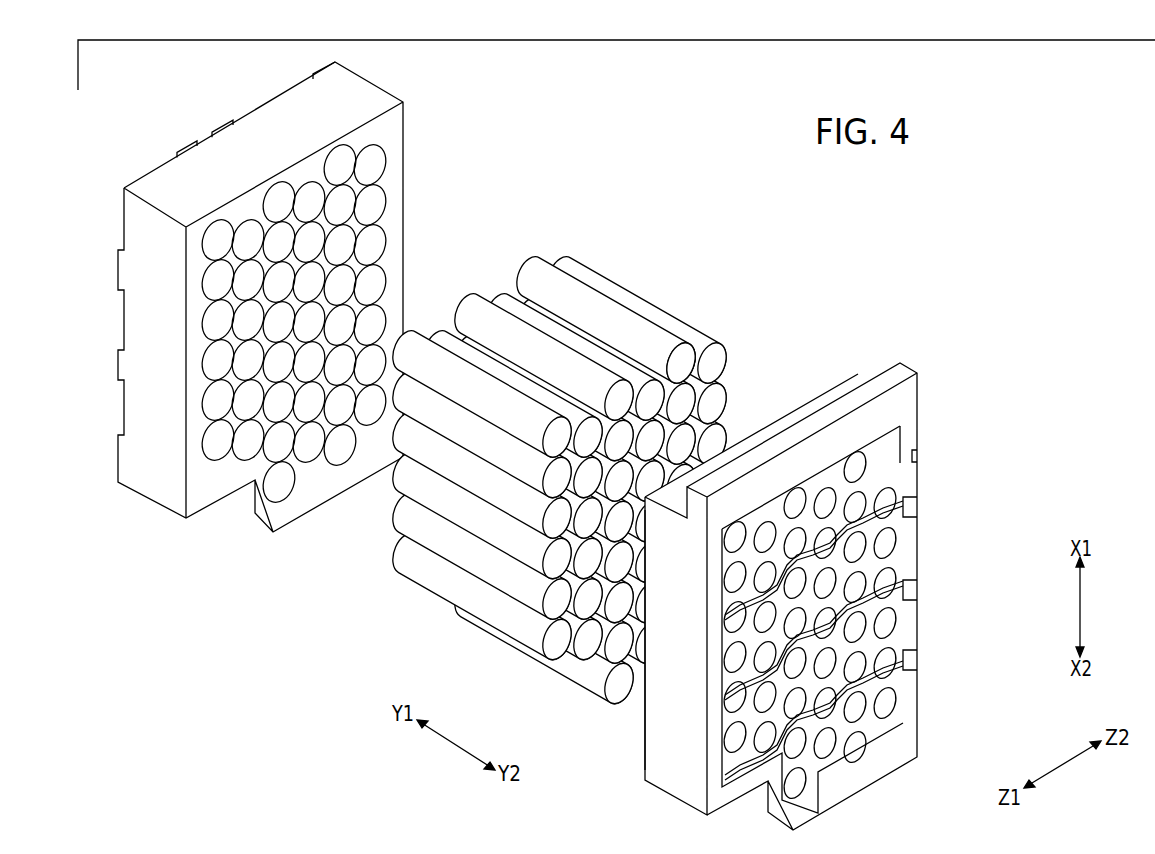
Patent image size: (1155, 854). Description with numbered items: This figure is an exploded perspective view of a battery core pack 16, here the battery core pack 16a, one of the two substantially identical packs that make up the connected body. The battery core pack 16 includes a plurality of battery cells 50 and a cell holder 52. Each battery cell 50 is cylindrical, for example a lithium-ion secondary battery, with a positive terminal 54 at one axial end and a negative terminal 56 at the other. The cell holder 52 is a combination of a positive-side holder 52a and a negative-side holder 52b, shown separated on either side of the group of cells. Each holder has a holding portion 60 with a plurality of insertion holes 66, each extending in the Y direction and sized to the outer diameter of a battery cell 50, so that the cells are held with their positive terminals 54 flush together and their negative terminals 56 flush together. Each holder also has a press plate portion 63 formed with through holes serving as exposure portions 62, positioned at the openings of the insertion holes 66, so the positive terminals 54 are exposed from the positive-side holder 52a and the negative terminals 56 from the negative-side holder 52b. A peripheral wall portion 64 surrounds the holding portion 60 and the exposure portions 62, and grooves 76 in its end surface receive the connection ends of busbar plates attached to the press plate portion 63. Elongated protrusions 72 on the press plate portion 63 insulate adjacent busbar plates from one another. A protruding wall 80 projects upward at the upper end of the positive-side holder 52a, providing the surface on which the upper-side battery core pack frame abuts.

The battery core pack 16a is at (865, 201).
The battery core pack 16 is at (528, 446).
The cell holder 52 is at (528, 446).
The positive-side holder 52a is at (857, 375).
The negative-side holder 52b is at (372, 95).
The battery cell 50 is at (571, 300).
The positive terminal 54 is at (678, 364).
The negative terminal 56 is at (514, 268).
The holding portion 60 is at (312, 487).
The exposure portion 62 is at (885, 511).
The press plate portion 63 is at (888, 570).
The peripheral wall portion 64 is at (665, 783).
The insertion hole 66 is at (380, 170).
The elongated protrusion 72 is at (837, 717).
The groove 76 is at (918, 458).
The protruding wall 80 is at (902, 373).